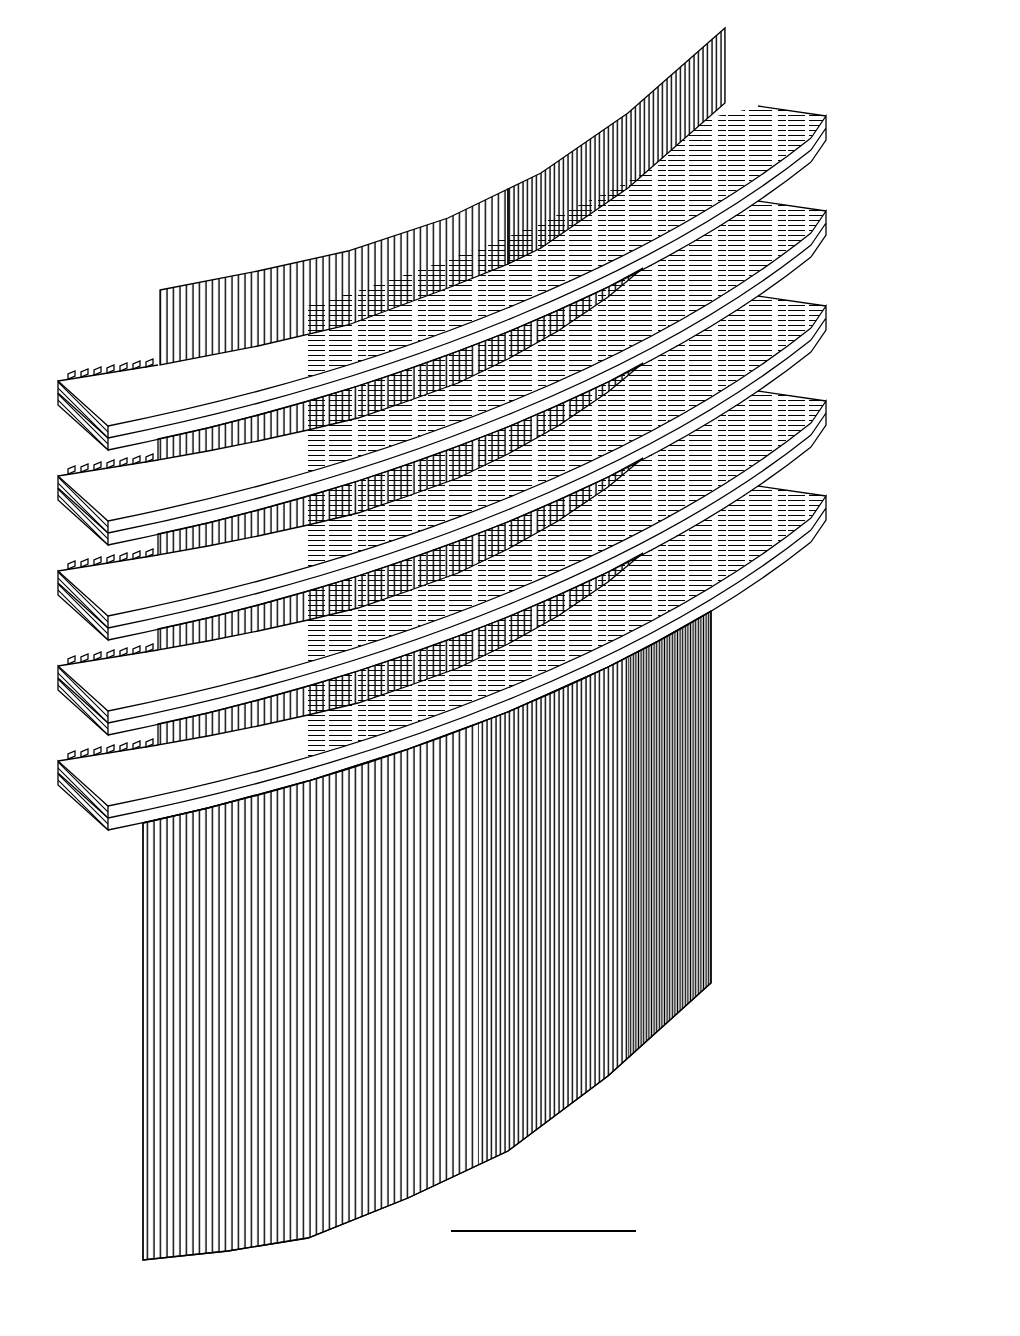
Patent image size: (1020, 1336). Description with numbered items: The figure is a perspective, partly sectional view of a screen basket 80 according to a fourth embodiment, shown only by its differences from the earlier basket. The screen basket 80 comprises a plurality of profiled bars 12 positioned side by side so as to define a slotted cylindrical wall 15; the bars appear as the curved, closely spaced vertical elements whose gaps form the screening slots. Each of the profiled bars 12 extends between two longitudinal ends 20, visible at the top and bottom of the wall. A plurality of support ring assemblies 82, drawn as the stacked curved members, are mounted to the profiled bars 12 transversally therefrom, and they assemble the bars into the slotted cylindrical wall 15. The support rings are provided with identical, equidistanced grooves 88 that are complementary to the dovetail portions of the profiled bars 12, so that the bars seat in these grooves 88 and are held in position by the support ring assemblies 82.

The profiled bars 12 is at (148, 980).
The slotted cylindrical wall 15 is at (612, 907).
The longitudinal ends 20 is at (154, 280).
The screen basket 80 is at (826, 161).
The support ring assemblies 82 is at (700, 550).
The grooves 88 is at (118, 366).